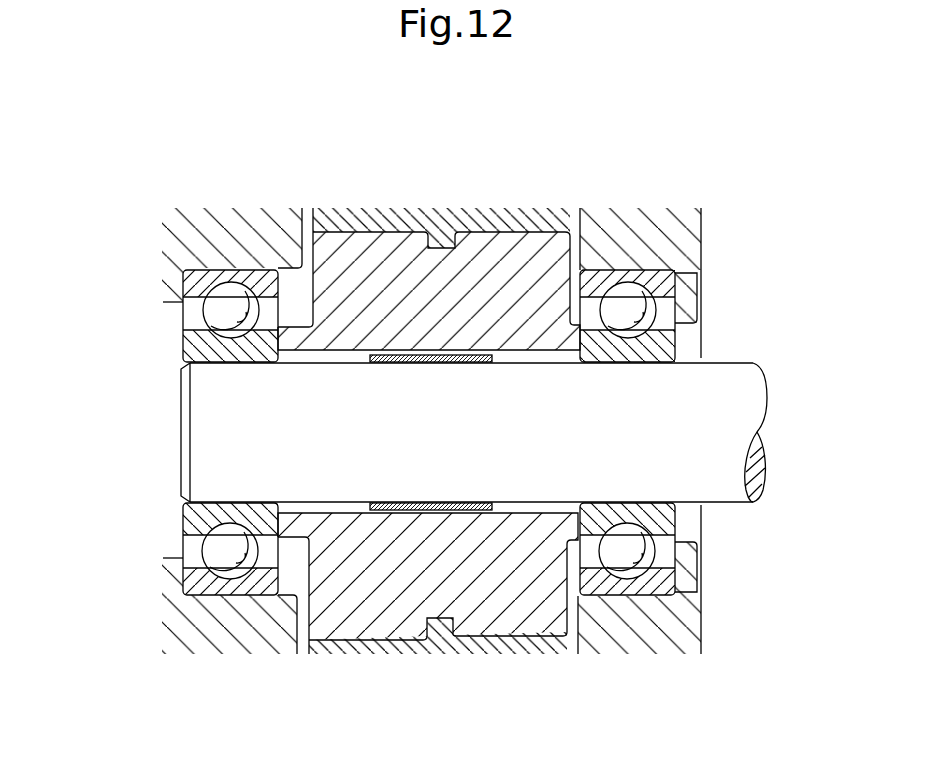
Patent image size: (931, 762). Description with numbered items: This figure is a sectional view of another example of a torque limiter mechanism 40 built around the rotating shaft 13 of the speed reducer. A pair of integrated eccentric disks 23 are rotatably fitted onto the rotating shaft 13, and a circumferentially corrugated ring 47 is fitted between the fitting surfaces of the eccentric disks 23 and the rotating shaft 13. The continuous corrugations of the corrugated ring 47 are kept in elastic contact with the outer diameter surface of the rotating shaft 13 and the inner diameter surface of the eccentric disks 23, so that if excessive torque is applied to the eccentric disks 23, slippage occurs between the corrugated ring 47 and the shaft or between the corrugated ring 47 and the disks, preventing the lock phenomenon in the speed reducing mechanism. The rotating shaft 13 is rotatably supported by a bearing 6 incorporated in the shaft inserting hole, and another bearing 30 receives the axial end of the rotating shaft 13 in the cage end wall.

The bearing 6 is at (698, 277).
The rotating shaft 13 is at (203, 433).
The eccentric disks 23 is at (500, 260).
The bearing 30 is at (193, 343).
The torque limiter mechanism 40 is at (421, 370).
The corrugated ring 47 is at (458, 364).